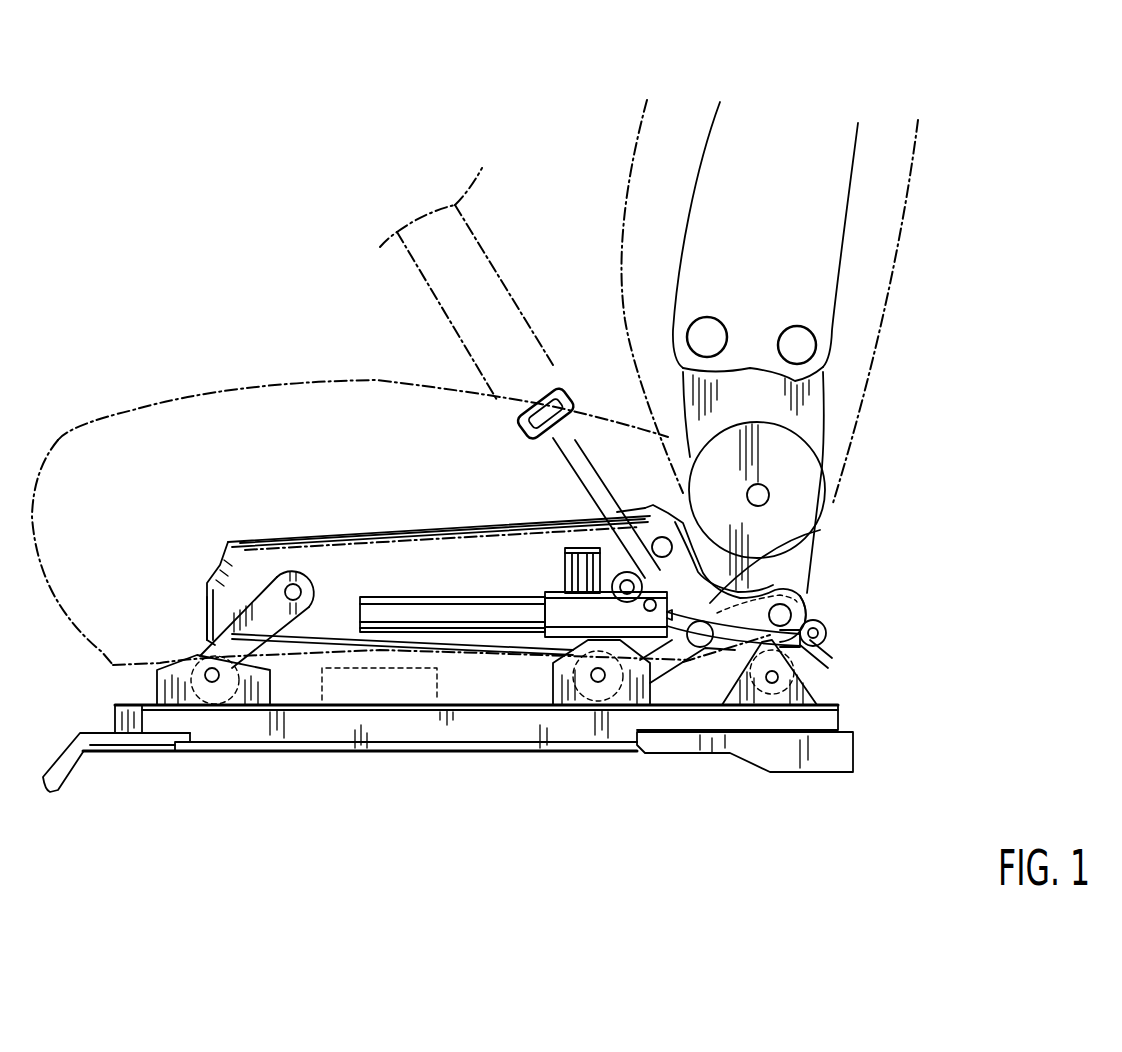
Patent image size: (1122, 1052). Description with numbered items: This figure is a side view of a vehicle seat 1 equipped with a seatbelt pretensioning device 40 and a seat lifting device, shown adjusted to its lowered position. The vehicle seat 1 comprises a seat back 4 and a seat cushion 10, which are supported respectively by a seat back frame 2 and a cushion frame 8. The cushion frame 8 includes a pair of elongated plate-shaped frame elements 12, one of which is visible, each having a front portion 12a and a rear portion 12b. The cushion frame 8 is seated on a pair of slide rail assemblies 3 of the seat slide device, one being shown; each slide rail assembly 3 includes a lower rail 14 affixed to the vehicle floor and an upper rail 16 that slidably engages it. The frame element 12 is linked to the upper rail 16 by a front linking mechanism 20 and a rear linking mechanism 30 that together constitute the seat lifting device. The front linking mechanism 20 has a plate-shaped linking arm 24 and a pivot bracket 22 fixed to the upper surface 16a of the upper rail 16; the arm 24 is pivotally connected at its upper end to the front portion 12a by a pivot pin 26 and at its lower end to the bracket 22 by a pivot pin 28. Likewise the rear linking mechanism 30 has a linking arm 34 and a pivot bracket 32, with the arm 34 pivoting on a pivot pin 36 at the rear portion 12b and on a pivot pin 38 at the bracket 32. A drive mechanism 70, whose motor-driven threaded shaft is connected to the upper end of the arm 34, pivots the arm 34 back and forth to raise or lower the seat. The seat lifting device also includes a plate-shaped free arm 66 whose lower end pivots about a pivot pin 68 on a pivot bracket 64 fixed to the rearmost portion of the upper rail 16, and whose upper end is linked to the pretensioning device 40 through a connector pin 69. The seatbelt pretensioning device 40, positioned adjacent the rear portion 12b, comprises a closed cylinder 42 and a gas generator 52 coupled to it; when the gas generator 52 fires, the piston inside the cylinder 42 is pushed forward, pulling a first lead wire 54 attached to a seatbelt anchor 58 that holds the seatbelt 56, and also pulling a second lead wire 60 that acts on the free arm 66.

The vehicle seat 1 is at (558, 149).
The seat back frame 2 is at (848, 182).
The slide rail assembly 3 is at (775, 790).
The seat back 4 is at (878, 263).
The cushion frame 8 is at (333, 534).
The seat cushion 10 is at (128, 428).
The frame element 12 is at (415, 543).
The front portion of frame element 12a is at (222, 575).
The rear portion of frame element 12b is at (820, 530).
The lower rail 14 is at (350, 745).
The upper rail 16 is at (838, 718).
The upper surface of upper rail 16a is at (397, 690).
The front linking mechanism 20 is at (229, 604).
The pivot bracket 22 is at (157, 692).
The linking arm 24 is at (255, 625).
The pivot pin 26 is at (278, 583).
The pivot pin 28 is at (213, 688).
The rear linking mechanism 30 is at (678, 684).
The pivot bracket 32 is at (553, 680).
The linking arm 34 is at (650, 665).
The pivot pin 36 is at (810, 595).
The pivot pin 38 is at (598, 690).
The seatbelt pretensioning device 40 is at (498, 590).
The cylinder 42 is at (447, 612).
The gas generator 52 is at (567, 570).
The first lead wire 54 is at (600, 478).
The seatbelt 56 is at (444, 303).
The seatbelt anchor 58 is at (558, 380).
The second lead wire 60 is at (722, 680).
The pivot bracket 64 is at (812, 745).
The free arm 66 is at (826, 663).
The pivot pin 68 is at (765, 690).
The connector pin 69 is at (822, 632).
The drive mechanism 70 is at (323, 693).